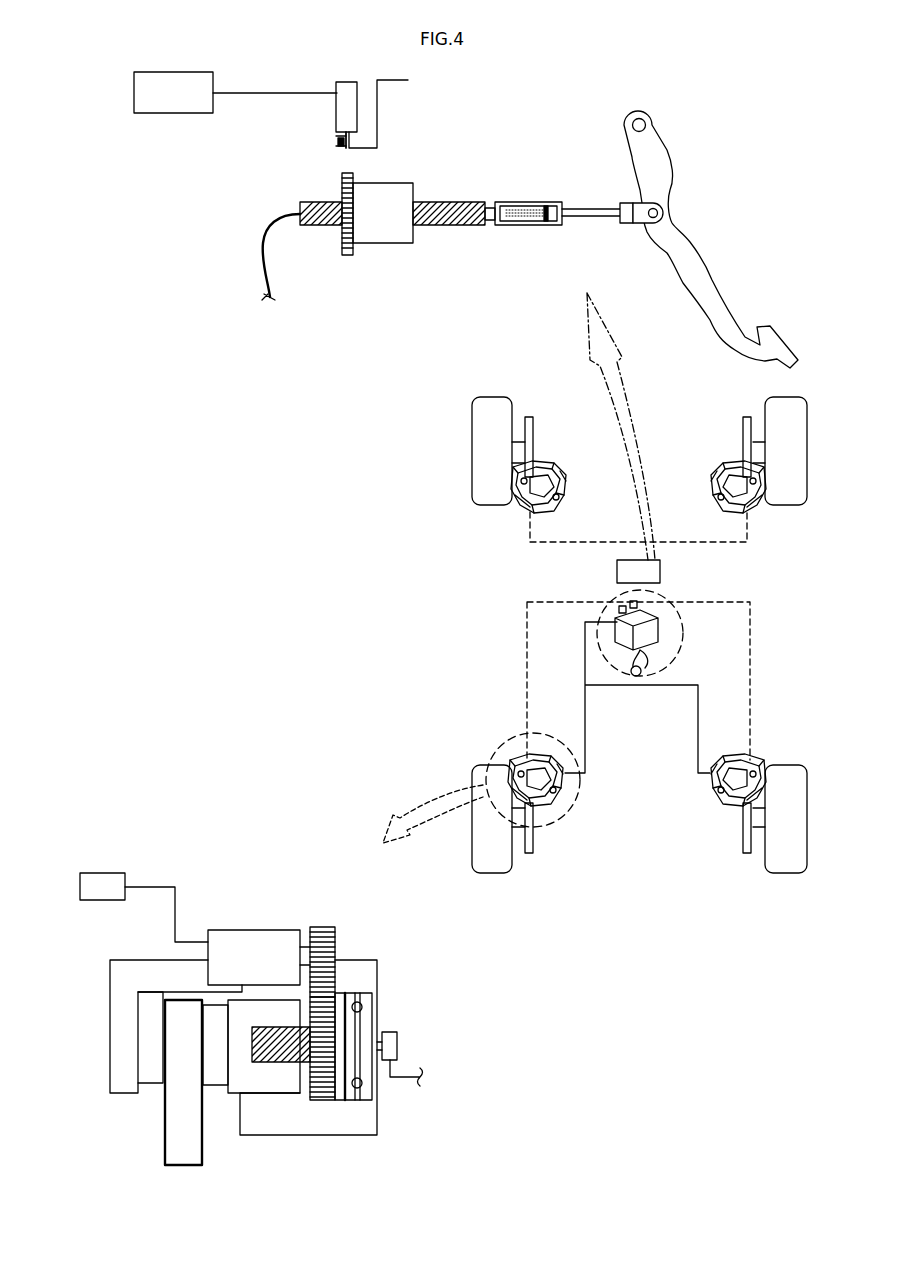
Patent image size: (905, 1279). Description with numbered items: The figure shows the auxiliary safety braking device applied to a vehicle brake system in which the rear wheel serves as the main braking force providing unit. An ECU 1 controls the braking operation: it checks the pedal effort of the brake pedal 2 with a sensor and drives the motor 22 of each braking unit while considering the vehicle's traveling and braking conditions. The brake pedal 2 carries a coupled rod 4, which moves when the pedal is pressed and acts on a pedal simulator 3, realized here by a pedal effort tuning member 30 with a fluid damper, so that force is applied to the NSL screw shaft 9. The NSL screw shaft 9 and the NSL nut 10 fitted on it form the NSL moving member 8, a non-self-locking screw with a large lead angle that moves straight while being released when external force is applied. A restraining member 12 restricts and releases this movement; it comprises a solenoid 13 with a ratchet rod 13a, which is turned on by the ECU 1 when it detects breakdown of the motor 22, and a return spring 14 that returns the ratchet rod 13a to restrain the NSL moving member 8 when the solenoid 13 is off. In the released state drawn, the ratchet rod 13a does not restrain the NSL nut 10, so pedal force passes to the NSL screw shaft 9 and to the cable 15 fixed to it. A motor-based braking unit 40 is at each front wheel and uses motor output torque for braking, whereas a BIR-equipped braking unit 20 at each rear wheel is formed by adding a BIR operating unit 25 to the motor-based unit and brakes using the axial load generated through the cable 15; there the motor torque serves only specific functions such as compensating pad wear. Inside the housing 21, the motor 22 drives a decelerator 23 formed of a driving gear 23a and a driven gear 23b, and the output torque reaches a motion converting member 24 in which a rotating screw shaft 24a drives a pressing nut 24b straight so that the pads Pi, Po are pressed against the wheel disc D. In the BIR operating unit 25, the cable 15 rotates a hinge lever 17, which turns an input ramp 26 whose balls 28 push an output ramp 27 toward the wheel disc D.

The ECU 1 is at (134, 93).
The brake pedal 2 is at (712, 290).
The pedal simulator 3 is at (529, 202).
The coupled rod 4 is at (596, 227).
The NSL moving member 8 is at (397, 257).
The NSL screw shaft 9 is at (392, 297).
The NSL nut 10 is at (387, 235).
The restraining member 12 is at (345, 133).
The solenoid 13 is at (345, 113).
The ratchet rod 13a is at (345, 152).
The return spring 14 is at (338, 141).
The cable 15 is at (256, 244).
The hinge lever 17 is at (398, 1042).
The BIR-equipped braking unit 20 is at (548, 800).
The housing 21 is at (379, 1128).
The motor 22 is at (265, 940).
The decelerator 23 is at (373, 984).
The driving gear 23a is at (323, 940).
The driven gear 23b is at (323, 1010).
The motion converting member 24 is at (280, 1113).
The screw shaft 24a is at (278, 1048).
The pressing nut 24b is at (265, 1082).
The BIR operating unit 25 is at (431, 1015).
The input ramp 26 is at (363, 1020).
The output ramp 27 is at (357, 992).
The balls 28 is at (362, 1000).
The pedal effort tuning member 30 is at (528, 232).
The motor-based braking unit 40 is at (553, 468).
The wheel disc D is at (180, 1140).
The pad Pi is at (213, 1027).
The pad Po is at (147, 1047).